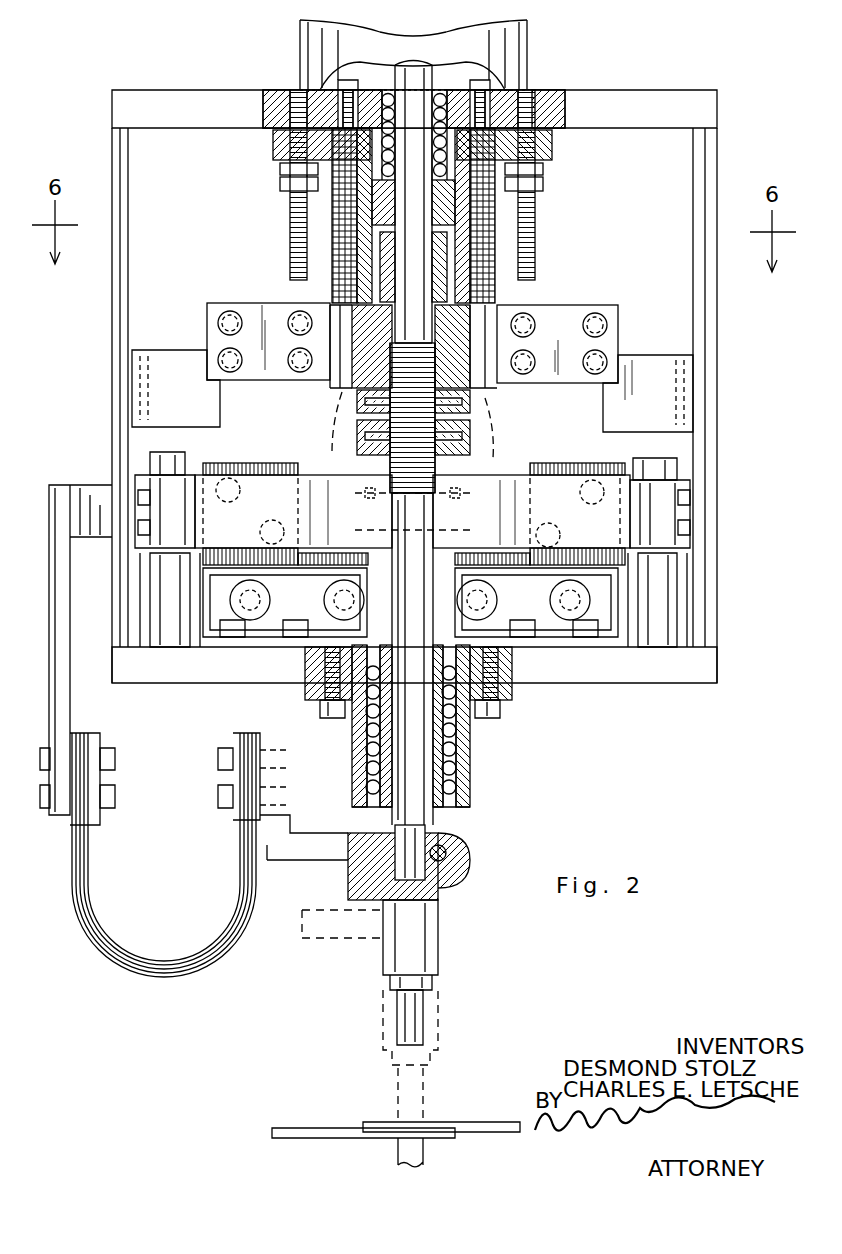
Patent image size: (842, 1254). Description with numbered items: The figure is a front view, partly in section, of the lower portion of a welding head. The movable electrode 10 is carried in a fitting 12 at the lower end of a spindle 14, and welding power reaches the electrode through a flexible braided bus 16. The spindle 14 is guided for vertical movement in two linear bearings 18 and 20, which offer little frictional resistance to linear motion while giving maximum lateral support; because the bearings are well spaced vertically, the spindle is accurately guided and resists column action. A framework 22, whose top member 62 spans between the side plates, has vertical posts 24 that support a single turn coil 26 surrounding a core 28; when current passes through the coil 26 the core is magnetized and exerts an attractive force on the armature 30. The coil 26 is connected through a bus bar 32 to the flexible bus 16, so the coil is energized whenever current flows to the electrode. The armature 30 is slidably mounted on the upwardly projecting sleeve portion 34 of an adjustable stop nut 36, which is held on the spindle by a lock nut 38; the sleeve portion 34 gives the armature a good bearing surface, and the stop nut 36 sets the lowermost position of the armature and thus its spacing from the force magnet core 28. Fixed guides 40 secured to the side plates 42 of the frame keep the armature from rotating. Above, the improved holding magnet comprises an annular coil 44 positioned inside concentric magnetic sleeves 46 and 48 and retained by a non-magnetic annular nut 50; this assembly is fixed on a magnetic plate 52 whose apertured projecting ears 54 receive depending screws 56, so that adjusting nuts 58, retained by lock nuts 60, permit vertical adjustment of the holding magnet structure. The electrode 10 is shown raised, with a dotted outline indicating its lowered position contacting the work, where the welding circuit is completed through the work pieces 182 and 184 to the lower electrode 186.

The movable electrode 10 is at (398, 1020).
The fitting 12 is at (450, 1000).
The spindle 14 is at (435, 820).
The flexible braided bus 16 is at (92, 940).
The linear bearing 18 is at (452, 748).
The linear bearing 20 is at (523, 65).
The framework 22 is at (642, 684).
The vertical post 24 is at (155, 640).
The single turn coil 26 is at (317, 492).
The core 28 is at (252, 463).
The armature 30 is at (272, 327).
The bus bar 32 is at (62, 485).
The upwardly projecting sleeve portion 34 is at (345, 283).
The adjustable stop nut 36 is at (355, 410).
The lock nut 38 is at (468, 427).
The fixed guide 40 is at (173, 370).
The side plate 42 is at (122, 308).
The annular coil 44 is at (490, 231).
The magnetic sleeve 46 is at (485, 240).
The magnetic sleeve 48 is at (467, 268).
The non-magnetic annular nut 50 is at (535, 327).
The magnetic plate 52 is at (317, 92).
The apertured projecting ear 54 is at (273, 148).
The screw 56 is at (290, 235).
The adjusting nut 58 is at (280, 173).
The lock nut 60 is at (280, 186).
The top frame bar 62 is at (629, 108).
The work piece 182 is at (480, 1112).
The work piece 184 is at (295, 1128).
The lower electrode 186 is at (405, 1158).